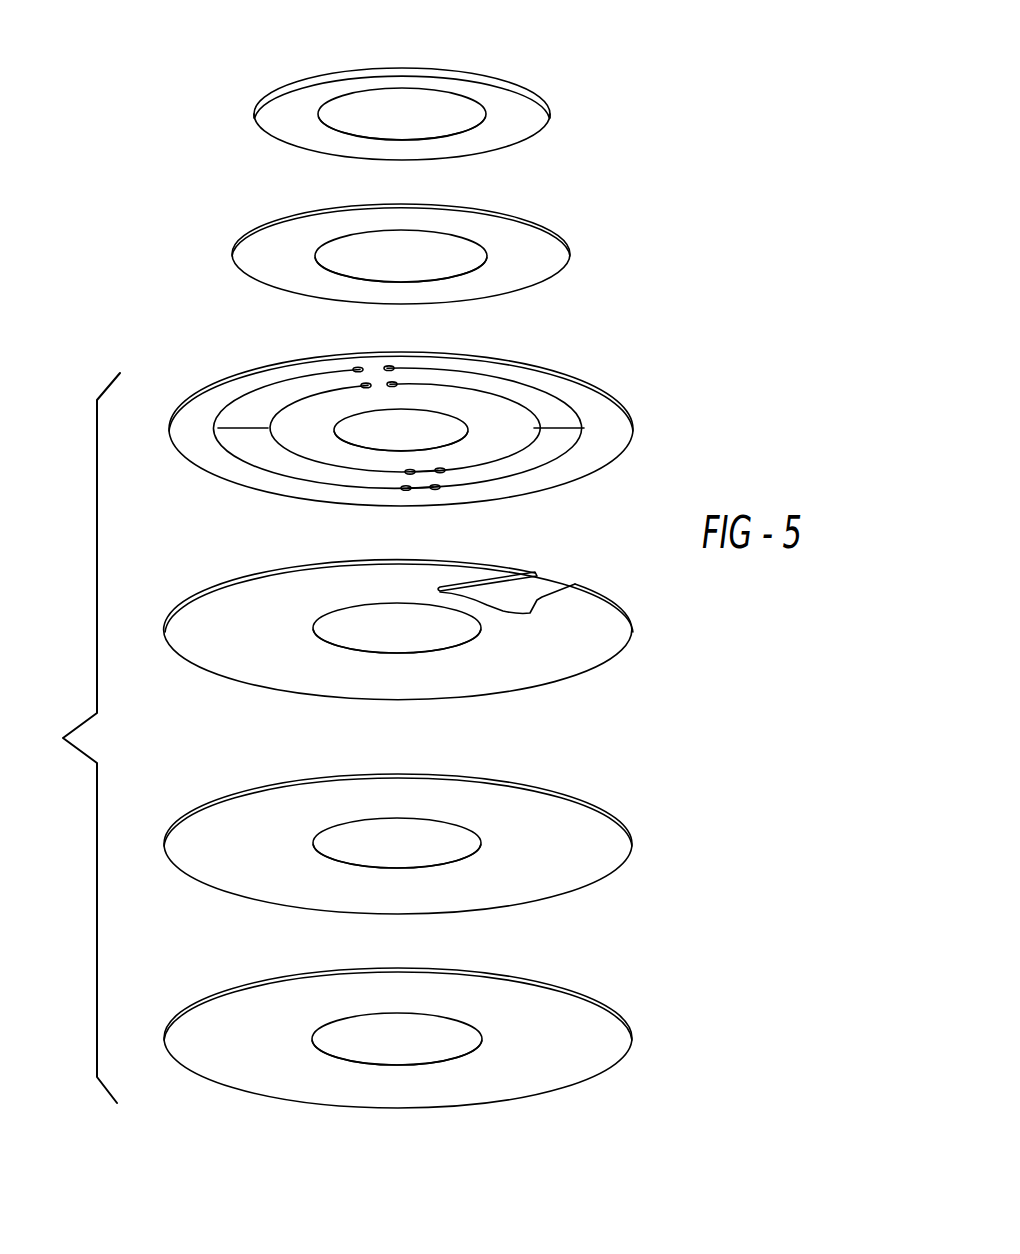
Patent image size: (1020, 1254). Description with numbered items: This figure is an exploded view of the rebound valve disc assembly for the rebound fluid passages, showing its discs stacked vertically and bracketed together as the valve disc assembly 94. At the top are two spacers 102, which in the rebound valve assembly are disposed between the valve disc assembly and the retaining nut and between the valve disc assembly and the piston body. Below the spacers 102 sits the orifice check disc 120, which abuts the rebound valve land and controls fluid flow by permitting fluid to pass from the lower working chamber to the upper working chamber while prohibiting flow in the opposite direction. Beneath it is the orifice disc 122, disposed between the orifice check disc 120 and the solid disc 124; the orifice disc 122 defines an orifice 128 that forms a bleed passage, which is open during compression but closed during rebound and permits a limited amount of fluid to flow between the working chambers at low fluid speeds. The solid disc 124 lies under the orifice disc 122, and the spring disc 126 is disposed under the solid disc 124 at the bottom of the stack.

The valve disc assembly 94 is at (76, 738).
The spacers 102 is at (523, 108).
The orifice check disc 120 is at (612, 407).
The orifice disc 122 is at (447, 600).
The solid disc 124 is at (602, 840).
The spring disc 126 is at (602, 1042).
The orifice 128 is at (537, 586).